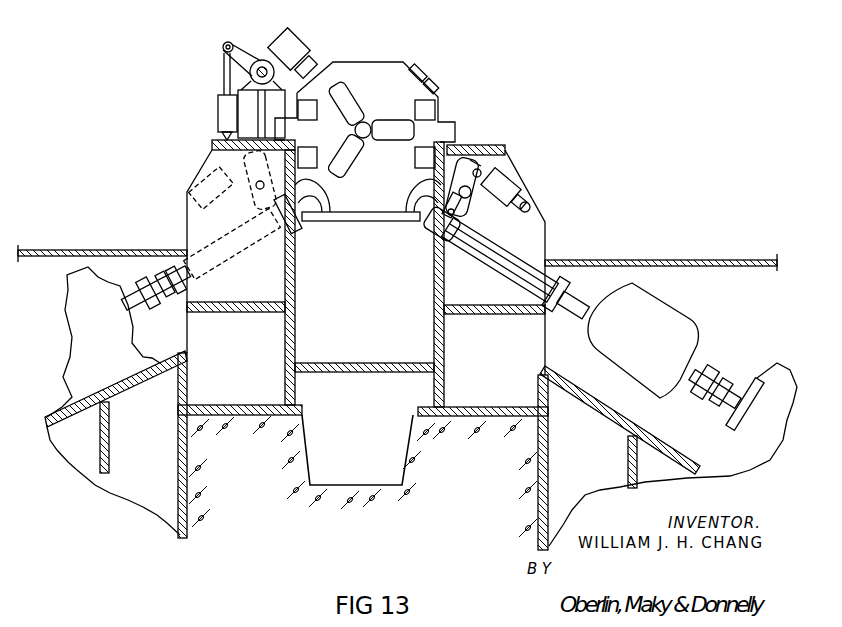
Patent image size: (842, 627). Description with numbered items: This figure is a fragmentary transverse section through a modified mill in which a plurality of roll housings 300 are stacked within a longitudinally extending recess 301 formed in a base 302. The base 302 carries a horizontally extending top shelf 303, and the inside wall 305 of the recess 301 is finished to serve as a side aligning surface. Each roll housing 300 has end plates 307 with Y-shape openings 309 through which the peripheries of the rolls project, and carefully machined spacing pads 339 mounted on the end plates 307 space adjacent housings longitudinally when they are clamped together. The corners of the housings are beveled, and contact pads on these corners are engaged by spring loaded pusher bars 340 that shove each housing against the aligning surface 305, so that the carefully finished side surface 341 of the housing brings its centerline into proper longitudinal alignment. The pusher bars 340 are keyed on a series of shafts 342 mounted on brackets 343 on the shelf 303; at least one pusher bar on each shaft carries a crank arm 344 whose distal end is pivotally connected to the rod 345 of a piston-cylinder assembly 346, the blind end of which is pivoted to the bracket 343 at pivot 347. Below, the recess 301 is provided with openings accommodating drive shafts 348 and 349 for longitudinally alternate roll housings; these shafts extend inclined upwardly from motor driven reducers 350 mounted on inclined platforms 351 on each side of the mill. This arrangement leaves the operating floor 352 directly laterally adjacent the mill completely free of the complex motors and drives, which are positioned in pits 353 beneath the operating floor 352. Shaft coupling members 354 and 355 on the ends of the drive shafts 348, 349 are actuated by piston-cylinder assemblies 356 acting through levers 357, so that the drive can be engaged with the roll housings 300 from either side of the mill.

The roll housing 300 is at (458, 100).
The recess 301 is at (365, 221).
The base 302 is at (545, 224).
The top shelf 303 is at (213, 145).
The inside wall 305 is at (475, 170).
The end plate 307 is at (405, 60).
The Y-shape opening 309 is at (370, 86).
The spacing pad 339 is at (305, 121).
The pusher bar 340 is at (300, 44).
The side surface 341 is at (428, 150).
The shaft 342 is at (262, 60).
The bracket 343 is at (248, 162).
The crank arm 344 is at (231, 42).
The rod 345 is at (224, 68).
The piston-cylinder assembly 346 is at (218, 105).
The pivot 347 is at (215, 133).
The drive shaft 348 is at (228, 255).
The drive shaft 349 is at (507, 262).
The motor driven reducer 350 is at (70, 354).
The inclined platform 351 is at (138, 392).
The operating floor 352 is at (100, 250).
The pit 353 is at (43, 262).
The shaft coupling member 354 is at (295, 240).
The shaft coupling member 355 is at (420, 236).
The piston-cylinder assembly 356 is at (199, 200).
The lever 357 is at (466, 203).